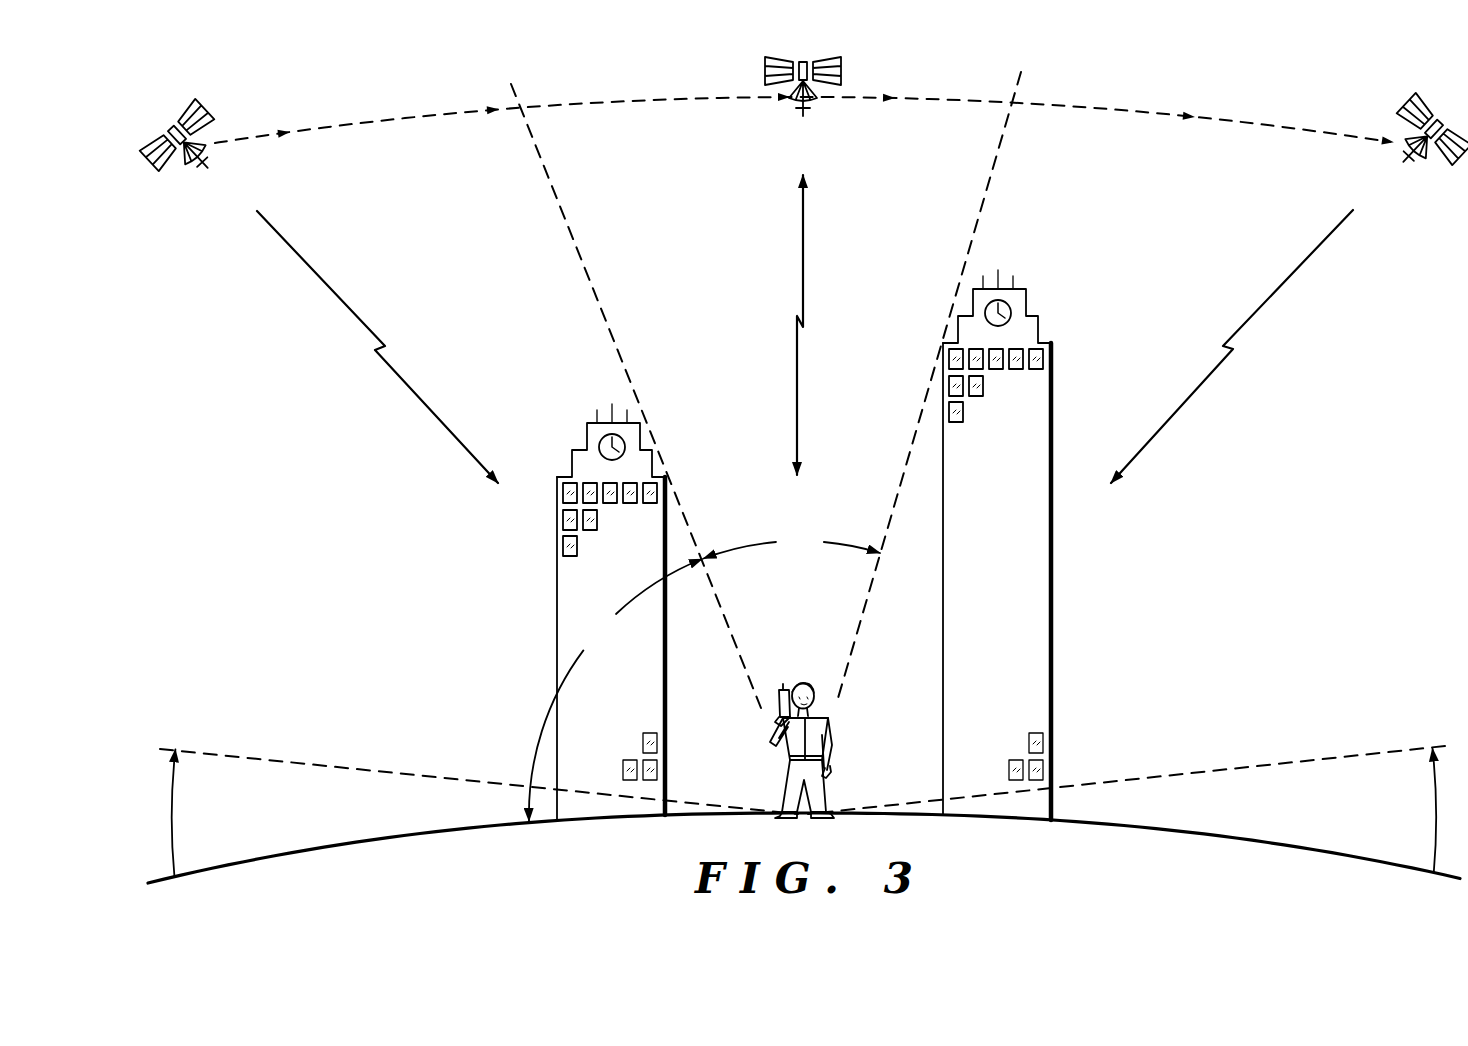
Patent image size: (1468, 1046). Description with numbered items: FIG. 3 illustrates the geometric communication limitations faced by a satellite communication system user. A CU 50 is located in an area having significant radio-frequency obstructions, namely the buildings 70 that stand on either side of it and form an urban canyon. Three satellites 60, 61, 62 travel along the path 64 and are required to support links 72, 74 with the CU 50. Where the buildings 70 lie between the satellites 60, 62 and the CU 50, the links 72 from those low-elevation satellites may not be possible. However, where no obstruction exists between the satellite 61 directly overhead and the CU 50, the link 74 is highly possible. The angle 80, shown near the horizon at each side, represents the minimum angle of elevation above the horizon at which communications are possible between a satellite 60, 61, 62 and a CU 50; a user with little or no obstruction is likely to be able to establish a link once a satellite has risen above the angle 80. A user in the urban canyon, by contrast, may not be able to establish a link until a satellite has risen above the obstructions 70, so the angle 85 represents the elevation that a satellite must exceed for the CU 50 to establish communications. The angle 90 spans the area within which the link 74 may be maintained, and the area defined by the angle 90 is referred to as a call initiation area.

The CU 50 is at (781, 690).
The satellite 60 is at (213, 105).
The satellite 61 is at (845, 62).
The satellite 62 is at (1395, 108).
The path 64 is at (345, 117).
The buildings 70 is at (619, 545).
The links 72 is at (434, 418).
The link 74 is at (797, 358).
The angle 80 is at (176, 814).
The angle 85 is at (615, 690).
The angle 90 is at (766, 390).